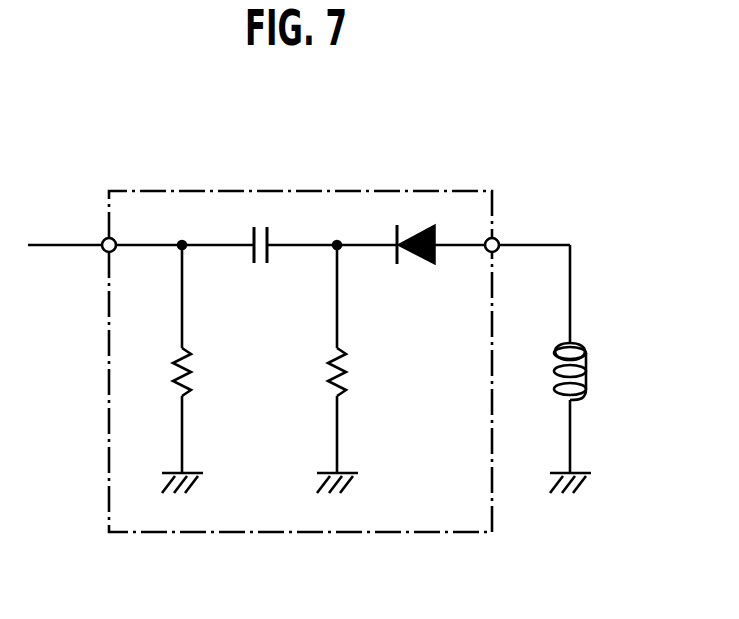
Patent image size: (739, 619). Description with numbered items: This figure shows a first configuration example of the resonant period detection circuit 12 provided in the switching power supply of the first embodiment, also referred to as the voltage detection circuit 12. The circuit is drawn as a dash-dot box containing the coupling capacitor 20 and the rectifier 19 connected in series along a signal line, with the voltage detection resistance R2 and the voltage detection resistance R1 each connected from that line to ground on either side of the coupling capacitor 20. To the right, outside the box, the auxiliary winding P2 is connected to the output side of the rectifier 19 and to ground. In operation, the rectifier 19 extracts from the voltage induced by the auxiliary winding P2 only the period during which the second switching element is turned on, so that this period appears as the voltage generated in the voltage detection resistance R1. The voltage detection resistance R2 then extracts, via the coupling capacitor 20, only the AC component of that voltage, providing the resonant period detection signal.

The resonant period detection circuit 12 is at (188, 190).
The coupling capacitor 20 is at (260, 226).
The rectifier 19 is at (419, 226).
The voltage detection resistance R2 is at (195, 371).
The voltage detection resistance R1 is at (351, 371).
The auxiliary winding P2 is at (590, 418).